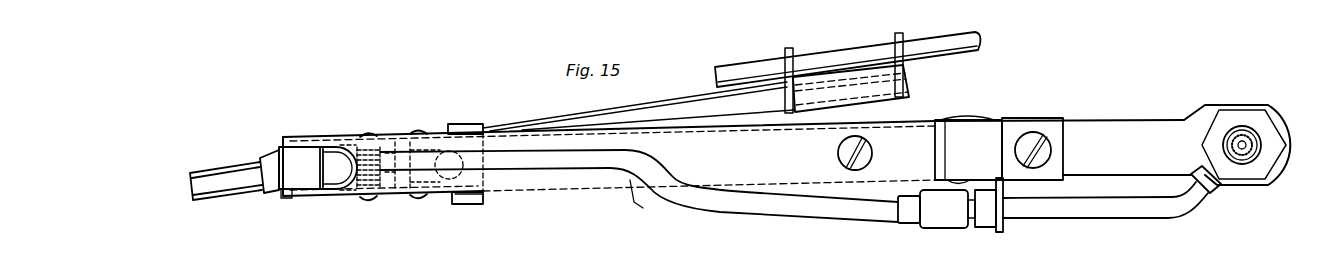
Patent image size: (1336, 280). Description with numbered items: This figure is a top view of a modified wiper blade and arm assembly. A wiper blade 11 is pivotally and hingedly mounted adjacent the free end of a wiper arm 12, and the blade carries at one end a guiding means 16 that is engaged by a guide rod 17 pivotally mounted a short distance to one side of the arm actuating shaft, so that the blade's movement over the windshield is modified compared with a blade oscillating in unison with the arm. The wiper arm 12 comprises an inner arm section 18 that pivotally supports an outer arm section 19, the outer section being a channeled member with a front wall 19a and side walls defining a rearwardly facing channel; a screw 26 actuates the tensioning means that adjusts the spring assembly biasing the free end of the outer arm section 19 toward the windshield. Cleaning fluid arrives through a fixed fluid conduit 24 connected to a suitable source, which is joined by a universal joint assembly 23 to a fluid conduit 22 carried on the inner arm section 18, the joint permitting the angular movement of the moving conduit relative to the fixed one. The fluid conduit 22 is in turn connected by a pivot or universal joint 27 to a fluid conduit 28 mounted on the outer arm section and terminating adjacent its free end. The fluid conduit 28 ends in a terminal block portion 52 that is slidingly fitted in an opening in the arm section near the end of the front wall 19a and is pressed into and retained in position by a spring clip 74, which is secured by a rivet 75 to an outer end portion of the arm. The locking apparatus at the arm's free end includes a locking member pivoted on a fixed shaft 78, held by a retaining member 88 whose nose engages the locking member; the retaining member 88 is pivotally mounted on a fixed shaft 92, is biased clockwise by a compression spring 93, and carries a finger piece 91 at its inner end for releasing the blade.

The wiper blade 11 is at (234, 157).
The wiper arm 12 is at (1162, 108).
The guiding means 16 is at (904, 82).
The guide rod 17 is at (963, 52).
The inner arm section 18 is at (1128, 122).
The outer arm section 19 is at (538, 200).
The front wall 19a is at (652, 201).
The fluid conduit 22 is at (1118, 212).
The universal joint assembly 23 is at (1270, 118).
The fluid conduit 24 is at (1252, 142).
The screw 26 is at (838, 148).
The pivot or universal joint 27 is at (942, 227).
The fluid conduit 28 is at (644, 157).
The terminal block portion 52 is at (342, 150).
The spring clip 74 is at (281, 197).
The rivet 75 is at (270, 156).
The fixed shaft 78 is at (367, 203).
The retaining member 88 is at (450, 205).
The finger piece 91 is at (483, 127).
The fixed shaft 92 is at (418, 130).
The compression spring 93 is at (473, 205).